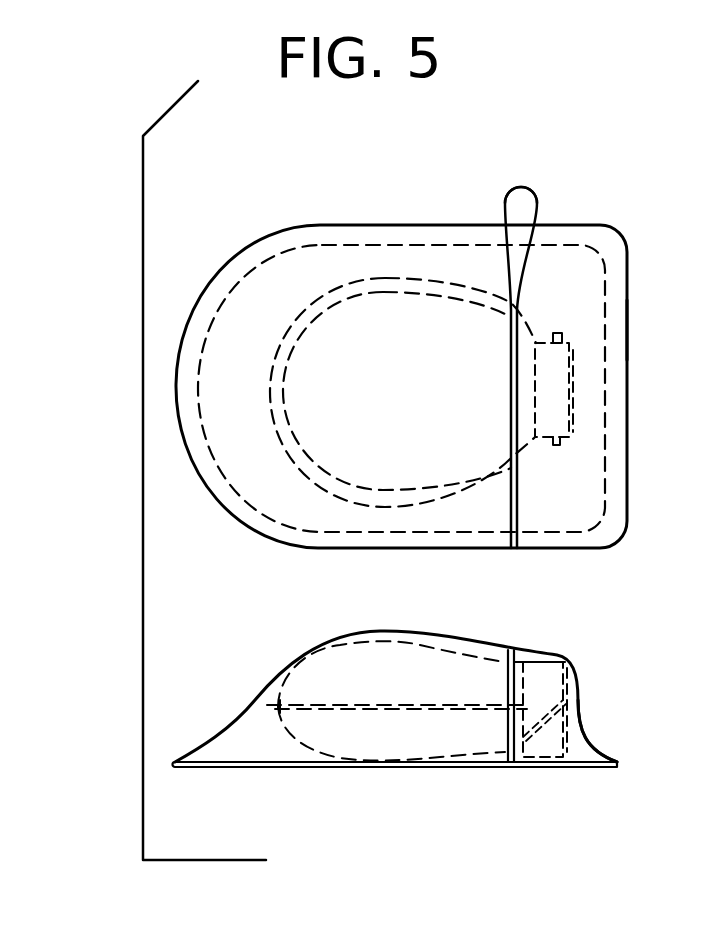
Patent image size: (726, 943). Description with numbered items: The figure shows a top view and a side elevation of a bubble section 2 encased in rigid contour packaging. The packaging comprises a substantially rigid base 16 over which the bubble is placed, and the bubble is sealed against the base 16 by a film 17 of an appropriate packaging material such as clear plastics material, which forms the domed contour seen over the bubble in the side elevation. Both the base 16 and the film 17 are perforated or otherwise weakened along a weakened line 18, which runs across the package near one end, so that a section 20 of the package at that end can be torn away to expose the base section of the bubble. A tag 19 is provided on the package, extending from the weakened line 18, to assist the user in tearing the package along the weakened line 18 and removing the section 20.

The bubble section 2 is at (385, 320).
The base 16 is at (250, 246).
The film 17 is at (278, 487).
The weakened line 18 is at (510, 502).
The tag 19 is at (528, 208).
The section 20 is at (616, 330).